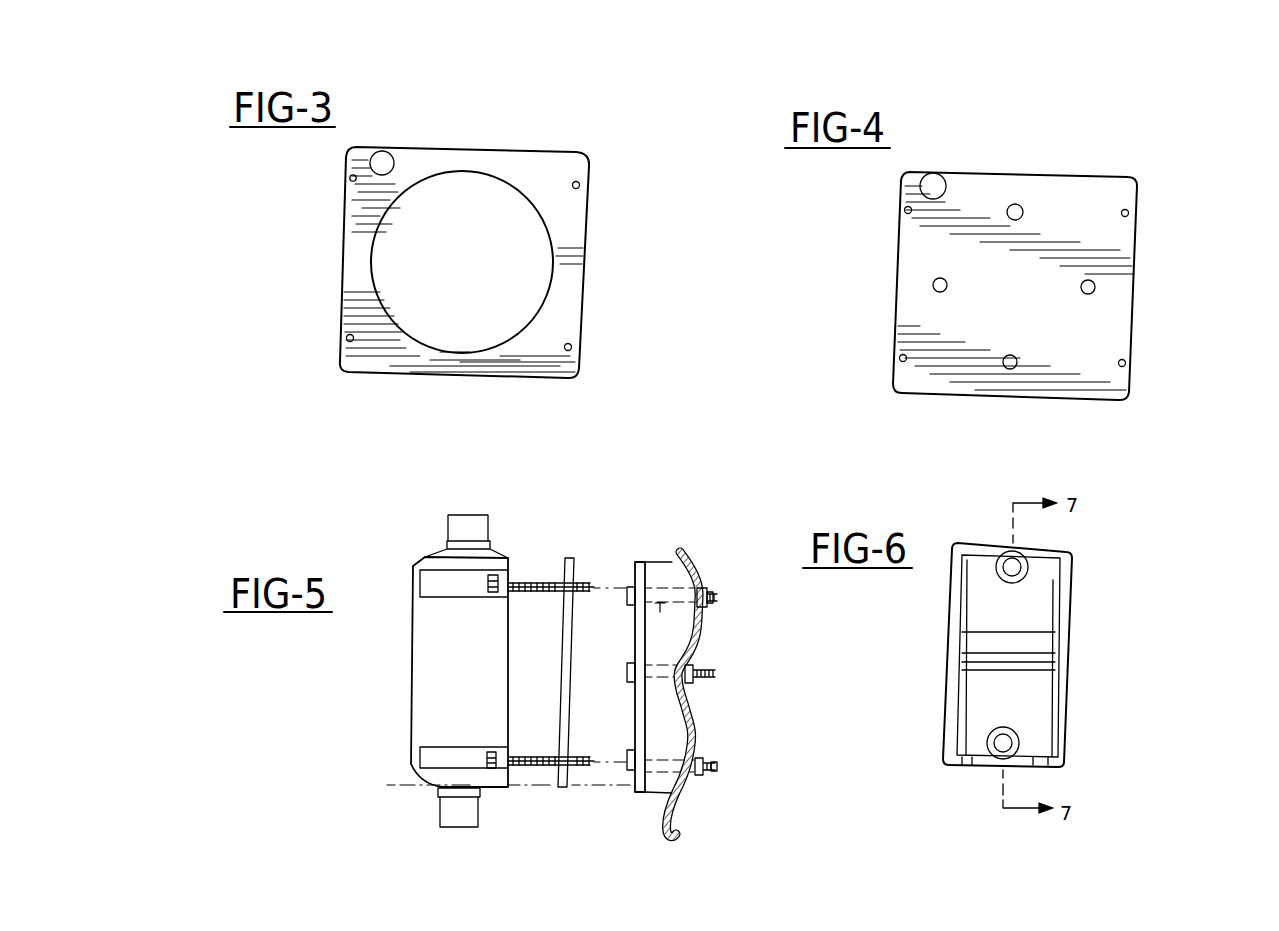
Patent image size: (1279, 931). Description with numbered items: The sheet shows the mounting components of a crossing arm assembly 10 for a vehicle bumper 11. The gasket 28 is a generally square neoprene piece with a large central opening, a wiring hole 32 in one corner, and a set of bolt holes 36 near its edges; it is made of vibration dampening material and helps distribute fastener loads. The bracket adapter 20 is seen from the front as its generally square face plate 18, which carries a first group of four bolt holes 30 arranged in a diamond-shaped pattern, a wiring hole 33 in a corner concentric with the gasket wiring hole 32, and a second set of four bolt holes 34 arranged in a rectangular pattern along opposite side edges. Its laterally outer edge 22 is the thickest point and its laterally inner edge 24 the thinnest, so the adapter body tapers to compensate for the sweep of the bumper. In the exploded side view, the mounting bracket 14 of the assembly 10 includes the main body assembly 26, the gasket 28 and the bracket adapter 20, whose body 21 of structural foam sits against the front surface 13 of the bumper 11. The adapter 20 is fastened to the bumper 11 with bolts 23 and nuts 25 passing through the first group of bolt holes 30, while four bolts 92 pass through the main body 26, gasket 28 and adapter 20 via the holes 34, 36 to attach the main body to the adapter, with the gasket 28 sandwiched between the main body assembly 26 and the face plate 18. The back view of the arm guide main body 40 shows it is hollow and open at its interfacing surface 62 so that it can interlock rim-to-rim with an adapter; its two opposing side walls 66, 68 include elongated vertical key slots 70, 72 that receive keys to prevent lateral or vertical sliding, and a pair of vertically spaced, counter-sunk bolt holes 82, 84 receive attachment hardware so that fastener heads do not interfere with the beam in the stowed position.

In FIG. 5, the crossing arm assembly 10 is at (440, 472).
In FIG. 5, the bumper 11 is at (688, 557).
In FIG. 5, the front surface 13 is at (660, 824).
In FIG. 5, the mounting bracket 14 is at (432, 671).
In FIG. 4, the face plate 18 is at (1113, 312).
In FIG. 5, the face plate 18 is at (635, 793).
In FIG. 5, the bracket adapter 20 is at (665, 570).
In FIG. 5, the body 21 is at (653, 712).
In FIG. 4, the laterally outer edge 22 is at (893, 257).
In FIG. 5, the bolts 23 is at (716, 672).
In FIG. 4, the laterally inner edge 24 is at (1135, 332).
In FIG. 5, the laterally inner edge 24 is at (674, 770).
In FIG. 5, the nuts 25 is at (705, 586).
In FIG. 5, the main body assembly 26 is at (413, 612).
In FIG. 3, the gasket 28 is at (533, 162).
In FIG. 5, the gasket 28 is at (562, 788).
In FIG. 4, the first group of bolt holes 30 is at (1009, 355).
In FIG. 5, the first group of bolt holes 30 is at (631, 723).
In FIG. 3, the wiring hole 32 is at (380, 166).
In FIG. 4, the wiring hole 33 is at (933, 174).
In FIG. 4, the second set of bolt holes 34 is at (1135, 210).
In FIG. 3, the gasket bolt holes 36 is at (577, 182).
In FIG. 6, the arm guide main body 40 is at (1040, 645).
In FIG. 6, the interfacing surface 62 is at (1063, 653).
In FIG. 6, the side wall 66 is at (958, 597).
In FIG. 6, the side wall 68 is at (1062, 598).
In FIG. 6, the key slot 70 is at (962, 633).
In FIG. 6, the key slot 72 is at (1053, 707).
In FIG. 6, the bolt hole 82 is at (1015, 568).
In FIG. 6, the bolt hole 84 is at (1005, 748).
In FIG. 5, the bolts 92 is at (536, 755).